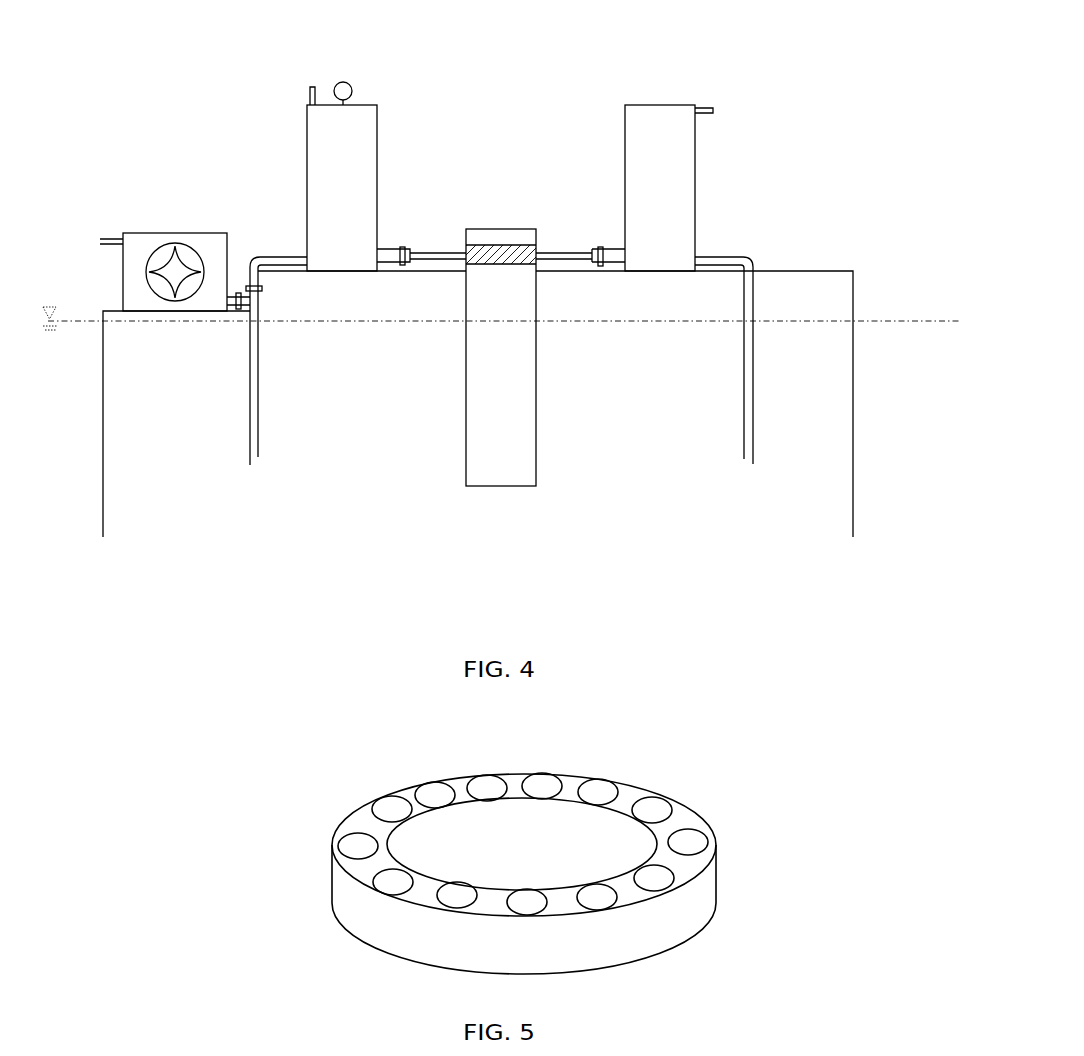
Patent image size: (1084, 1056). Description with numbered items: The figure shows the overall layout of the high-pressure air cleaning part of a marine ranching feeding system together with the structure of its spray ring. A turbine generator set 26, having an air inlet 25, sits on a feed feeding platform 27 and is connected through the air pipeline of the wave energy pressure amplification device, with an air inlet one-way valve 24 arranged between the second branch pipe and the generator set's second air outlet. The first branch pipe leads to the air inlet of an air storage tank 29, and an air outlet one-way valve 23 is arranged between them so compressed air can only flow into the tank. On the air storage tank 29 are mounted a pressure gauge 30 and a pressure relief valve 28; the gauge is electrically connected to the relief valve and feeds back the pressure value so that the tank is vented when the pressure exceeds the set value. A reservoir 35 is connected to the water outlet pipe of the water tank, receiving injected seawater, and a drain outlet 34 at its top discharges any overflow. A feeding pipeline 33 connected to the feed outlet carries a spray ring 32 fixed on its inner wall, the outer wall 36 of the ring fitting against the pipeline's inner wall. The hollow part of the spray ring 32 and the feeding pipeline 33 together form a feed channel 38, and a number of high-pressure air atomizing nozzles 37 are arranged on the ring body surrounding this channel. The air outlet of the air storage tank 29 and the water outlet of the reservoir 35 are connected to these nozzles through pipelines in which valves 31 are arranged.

In FIG. 4, the air outlet one-way valve 23 is at (262, 290).
In FIG. 4, the air inlet one-way valve 24 is at (239, 313).
In FIG. 4, the air inlet 25 is at (107, 237).
In FIG. 4, the turbine generator set 26 is at (122, 300).
In FIG. 4, the feed feeding platform 27 is at (103, 395).
In FIG. 4, the pressure relief valve 28 is at (307, 103).
In FIG. 4, the air storage tank 29 is at (307, 207).
In FIG. 4, the pressure gauge 30 is at (405, 81).
In FIG. 4, the valve 31 is at (396, 247).
In FIG. 4, the spray ring 32 is at (477, 250).
In FIG. 4, the feeding pipeline 33 is at (536, 229).
In FIG. 4, the drain outlet 34 is at (695, 107).
In FIG. 4, the reservoir 35 is at (695, 177).
In FIG. 5, the outer wall 36 is at (342, 824).
In FIG. 5, the high-pressure air atomizing nozzle 37 is at (387, 883).
In FIG. 5, the feed channel 38 is at (492, 872).